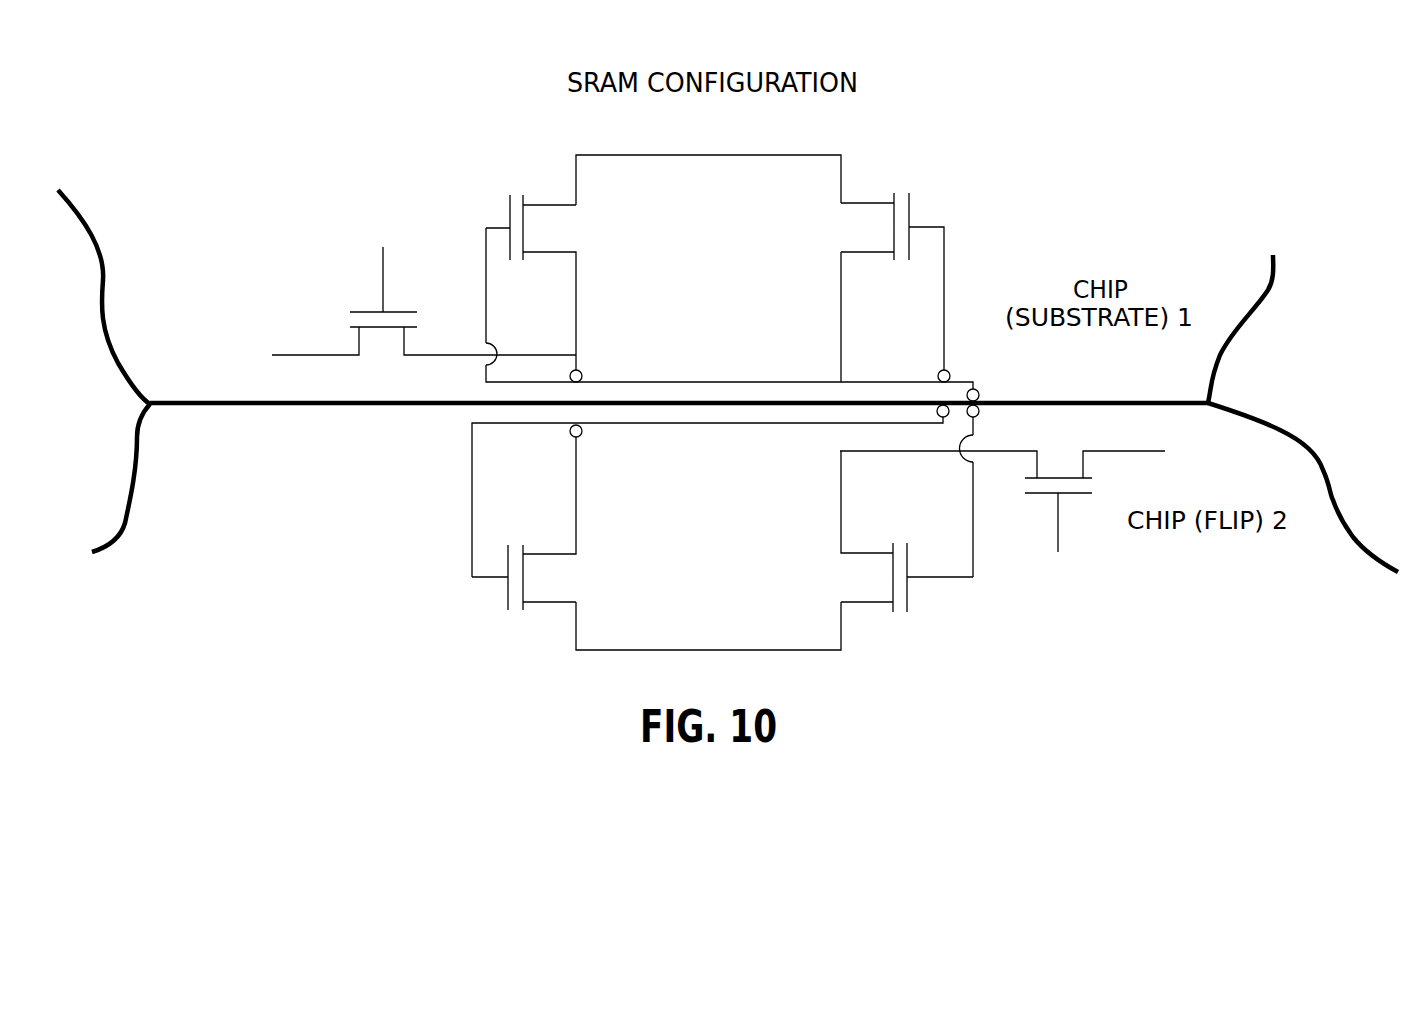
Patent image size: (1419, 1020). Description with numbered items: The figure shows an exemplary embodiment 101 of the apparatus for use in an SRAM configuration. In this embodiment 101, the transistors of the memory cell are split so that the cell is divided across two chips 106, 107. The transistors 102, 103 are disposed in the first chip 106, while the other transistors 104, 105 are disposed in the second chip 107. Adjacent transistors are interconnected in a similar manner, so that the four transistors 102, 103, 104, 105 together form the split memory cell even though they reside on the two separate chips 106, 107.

The embodiment 101 is at (337, 157).
The transistor 102 is at (565, 227).
The transistor 103 is at (847, 227).
The transistor 104 is at (570, 577).
The transistor 105 is at (853, 580).
The chip 106 is at (1215, 317).
The chip 107 is at (1290, 493).